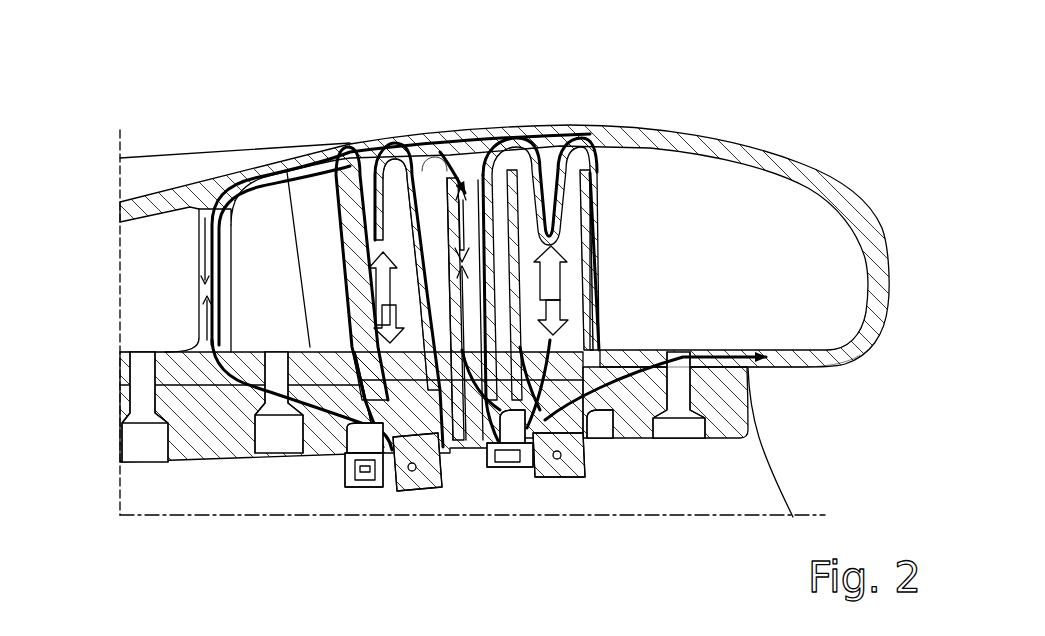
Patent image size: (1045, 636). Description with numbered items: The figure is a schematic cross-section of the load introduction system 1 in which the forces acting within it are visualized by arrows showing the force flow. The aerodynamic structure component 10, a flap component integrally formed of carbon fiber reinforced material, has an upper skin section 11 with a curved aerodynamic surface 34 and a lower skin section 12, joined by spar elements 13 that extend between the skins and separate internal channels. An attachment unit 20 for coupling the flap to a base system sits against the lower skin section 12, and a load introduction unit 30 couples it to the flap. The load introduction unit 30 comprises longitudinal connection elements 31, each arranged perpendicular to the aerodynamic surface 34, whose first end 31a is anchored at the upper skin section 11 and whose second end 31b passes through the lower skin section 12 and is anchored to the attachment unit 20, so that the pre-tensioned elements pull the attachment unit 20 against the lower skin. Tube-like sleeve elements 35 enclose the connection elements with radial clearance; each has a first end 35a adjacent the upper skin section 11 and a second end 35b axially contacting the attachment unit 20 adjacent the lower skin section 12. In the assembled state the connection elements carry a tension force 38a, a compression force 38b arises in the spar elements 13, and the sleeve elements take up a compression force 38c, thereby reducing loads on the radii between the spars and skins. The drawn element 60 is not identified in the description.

The load introduction system 1 is at (819, 119).
The aerodynamic structure component 10 is at (191, 176).
The upper skin section 11 is at (726, 140).
The lower skin section 12 is at (812, 360).
The spar elements 13 is at (457, 133).
The attachment unit 20 is at (196, 423).
The load introduction unit 30 is at (810, 230).
The longitudinal connection elements 31 is at (368, 143).
The first end 31a is at (330, 137).
The second end 31b is at (421, 490).
The aerodynamic surface 34 is at (469, 128).
The sleeve elements 35 is at (601, 288).
The first end of sleeve element 35a is at (322, 197).
The second end of sleeve element 35b is at (602, 357).
The tension force 38a is at (601, 250).
The compression force 38b is at (212, 333).
The compression force in sleeve elements 38c is at (601, 322).
The fastening element 60 is at (260, 390).